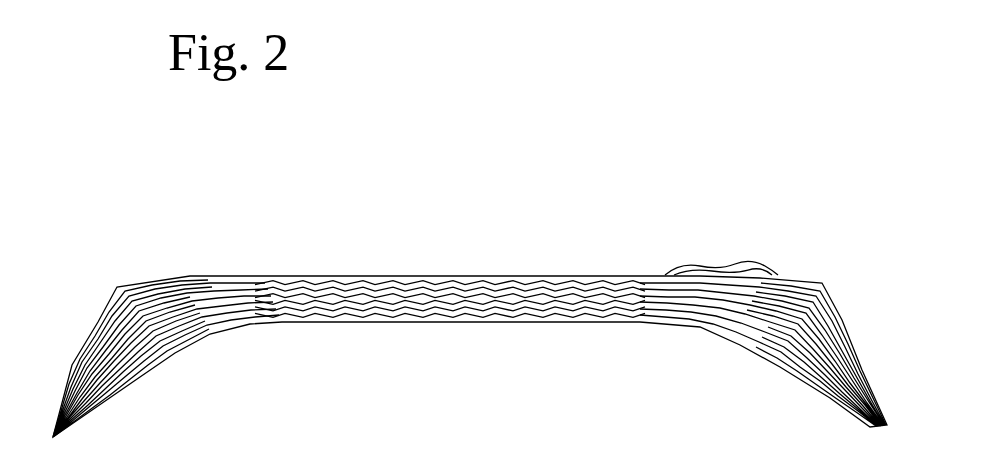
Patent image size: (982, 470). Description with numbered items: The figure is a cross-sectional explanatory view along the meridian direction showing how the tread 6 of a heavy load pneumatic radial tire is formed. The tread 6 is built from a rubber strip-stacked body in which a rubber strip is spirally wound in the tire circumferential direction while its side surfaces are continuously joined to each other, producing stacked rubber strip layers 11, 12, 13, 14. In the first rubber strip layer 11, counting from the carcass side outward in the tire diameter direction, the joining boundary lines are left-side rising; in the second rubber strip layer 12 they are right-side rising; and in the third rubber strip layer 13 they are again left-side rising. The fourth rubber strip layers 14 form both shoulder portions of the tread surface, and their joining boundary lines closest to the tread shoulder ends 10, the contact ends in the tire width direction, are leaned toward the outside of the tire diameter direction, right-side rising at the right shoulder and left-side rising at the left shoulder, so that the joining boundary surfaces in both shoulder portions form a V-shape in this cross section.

The tread 6 is at (547, 270).
The tread shoulder end 10 is at (117, 287).
The first rubber strip layer 11 is at (340, 323).
The second rubber strip layer 12 is at (553, 304).
The third rubber strip layer 13 is at (405, 277).
The fourth rubber strip layer 14 is at (763, 229).